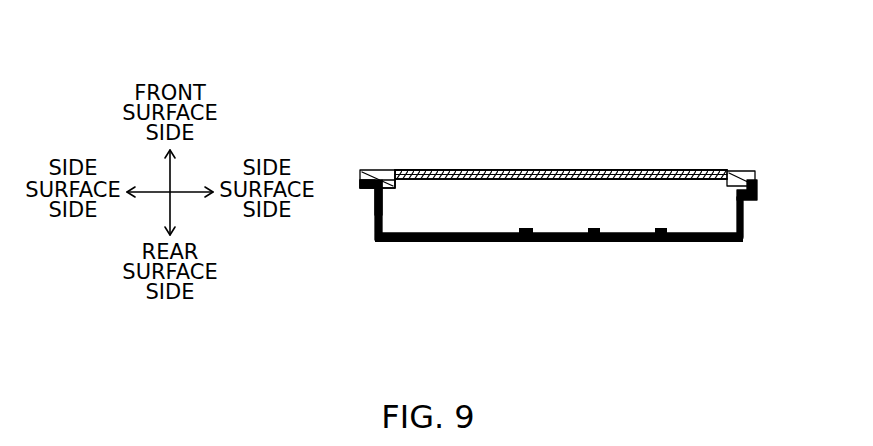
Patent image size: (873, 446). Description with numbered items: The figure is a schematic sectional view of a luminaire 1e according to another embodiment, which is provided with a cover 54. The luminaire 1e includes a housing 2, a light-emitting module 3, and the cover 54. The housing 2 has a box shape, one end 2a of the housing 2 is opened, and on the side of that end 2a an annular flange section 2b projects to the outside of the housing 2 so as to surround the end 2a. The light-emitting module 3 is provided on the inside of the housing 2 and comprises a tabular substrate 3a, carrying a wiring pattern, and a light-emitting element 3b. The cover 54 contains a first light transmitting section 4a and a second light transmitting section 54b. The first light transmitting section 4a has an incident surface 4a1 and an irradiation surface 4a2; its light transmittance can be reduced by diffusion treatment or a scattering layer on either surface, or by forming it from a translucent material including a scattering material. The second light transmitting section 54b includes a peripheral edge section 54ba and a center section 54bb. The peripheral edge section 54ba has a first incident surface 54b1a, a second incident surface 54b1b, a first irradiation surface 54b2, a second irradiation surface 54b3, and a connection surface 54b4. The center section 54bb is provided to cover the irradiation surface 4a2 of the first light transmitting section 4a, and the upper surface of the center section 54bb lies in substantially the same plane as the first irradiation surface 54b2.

The luminaire 1e is at (740, 96).
The housing 2 is at (731, 248).
The end 2a is at (757, 180).
The flange section 2b is at (746, 203).
The light-emitting module 3 is at (523, 322).
The substrate 3a is at (548, 242).
The light-emitting element 3b is at (593, 242).
The first light transmitting section 4a is at (553, 170).
The incident surface 4a1 is at (668, 182).
The irradiation surface 4a2 is at (645, 167).
The cover 54 is at (588, 62).
The second light transmitting section 54b is at (475, 164).
The peripheral edge section 54ba is at (378, 170).
The center section 54bb is at (430, 170).
The first incident surface 54b1a is at (392, 188).
The second incident surface 54b1b is at (384, 192).
The first irradiation surface 54b2 is at (362, 167).
The second irradiation surface 54b3 is at (357, 183).
The connection surface 54b4 is at (398, 183).